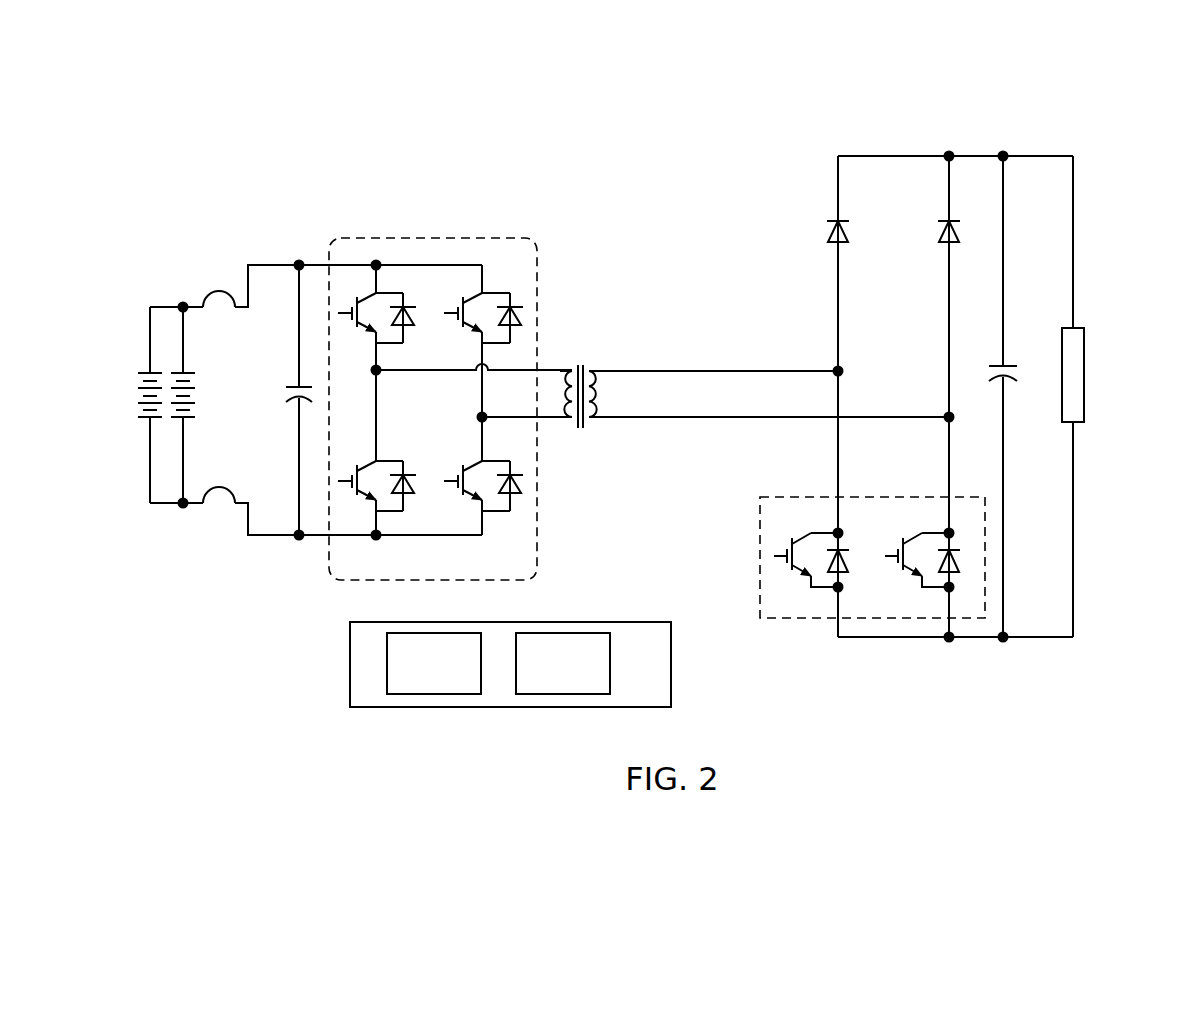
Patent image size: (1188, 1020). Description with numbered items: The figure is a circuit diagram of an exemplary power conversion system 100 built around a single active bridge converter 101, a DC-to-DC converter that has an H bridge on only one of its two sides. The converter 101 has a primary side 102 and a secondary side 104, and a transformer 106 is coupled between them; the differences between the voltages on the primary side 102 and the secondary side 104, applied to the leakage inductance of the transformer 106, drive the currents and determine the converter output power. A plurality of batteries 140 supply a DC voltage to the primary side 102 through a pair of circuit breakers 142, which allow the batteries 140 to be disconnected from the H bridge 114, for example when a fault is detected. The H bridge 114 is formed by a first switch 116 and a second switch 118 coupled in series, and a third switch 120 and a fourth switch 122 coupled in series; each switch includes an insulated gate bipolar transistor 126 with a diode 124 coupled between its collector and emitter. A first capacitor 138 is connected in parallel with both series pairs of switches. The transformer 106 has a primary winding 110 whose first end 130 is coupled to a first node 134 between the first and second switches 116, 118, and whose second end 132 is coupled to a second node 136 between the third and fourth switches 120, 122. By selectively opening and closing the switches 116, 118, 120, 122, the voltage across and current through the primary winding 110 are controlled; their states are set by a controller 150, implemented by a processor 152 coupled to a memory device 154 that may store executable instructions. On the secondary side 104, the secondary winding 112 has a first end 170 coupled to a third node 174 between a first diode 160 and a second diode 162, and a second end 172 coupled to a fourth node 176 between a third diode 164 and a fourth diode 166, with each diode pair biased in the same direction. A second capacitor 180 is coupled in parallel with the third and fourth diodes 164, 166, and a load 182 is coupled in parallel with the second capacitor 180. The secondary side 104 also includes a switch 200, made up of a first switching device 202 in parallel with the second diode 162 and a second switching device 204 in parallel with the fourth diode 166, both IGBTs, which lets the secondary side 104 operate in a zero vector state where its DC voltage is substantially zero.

The power conversion system 100 is at (665, 106).
The single active bridge converter 101 is at (614, 283).
The primary side 102 is at (312, 263).
The secondary side 104 is at (976, 156).
The transformer 106 is at (590, 365).
The primary winding 110 is at (566, 390).
The secondary winding 112 is at (594, 391).
The H bridge 114 is at (498, 238).
The first switch 116 is at (386, 293).
The second switch 118 is at (387, 459).
The third switch 120 is at (500, 290).
The fourth switch 122 is at (515, 462).
The diode 124 is at (413, 323).
The insulated gate bipolar transistor 126 is at (365, 334).
The first end 130 is at (568, 368).
The second end 132 is at (568, 420).
The first node 134 is at (383, 373).
The second node 136 is at (478, 418).
The first capacitor 138 is at (295, 386).
The batteries 140 is at (140, 373).
The circuit breakers 142 is at (221, 290).
The controller 150 is at (598, 622).
The processor 152 is at (413, 677).
The memory device 154 is at (543, 677).
The first diode 160 is at (826, 230).
The second diode 162 is at (848, 563).
The third diode 164 is at (955, 232).
The fourth diode 166 is at (959, 563).
The first end 170 is at (735, 369).
The second end 172 is at (655, 419).
The third node 174 is at (845, 371).
The fourth node 176 is at (951, 420).
The second capacitor 180 is at (1010, 366).
The load 182 is at (1086, 355).
The switch 200 is at (787, 618).
The first switching device 202 is at (808, 533).
The second switching device 204 is at (920, 534).